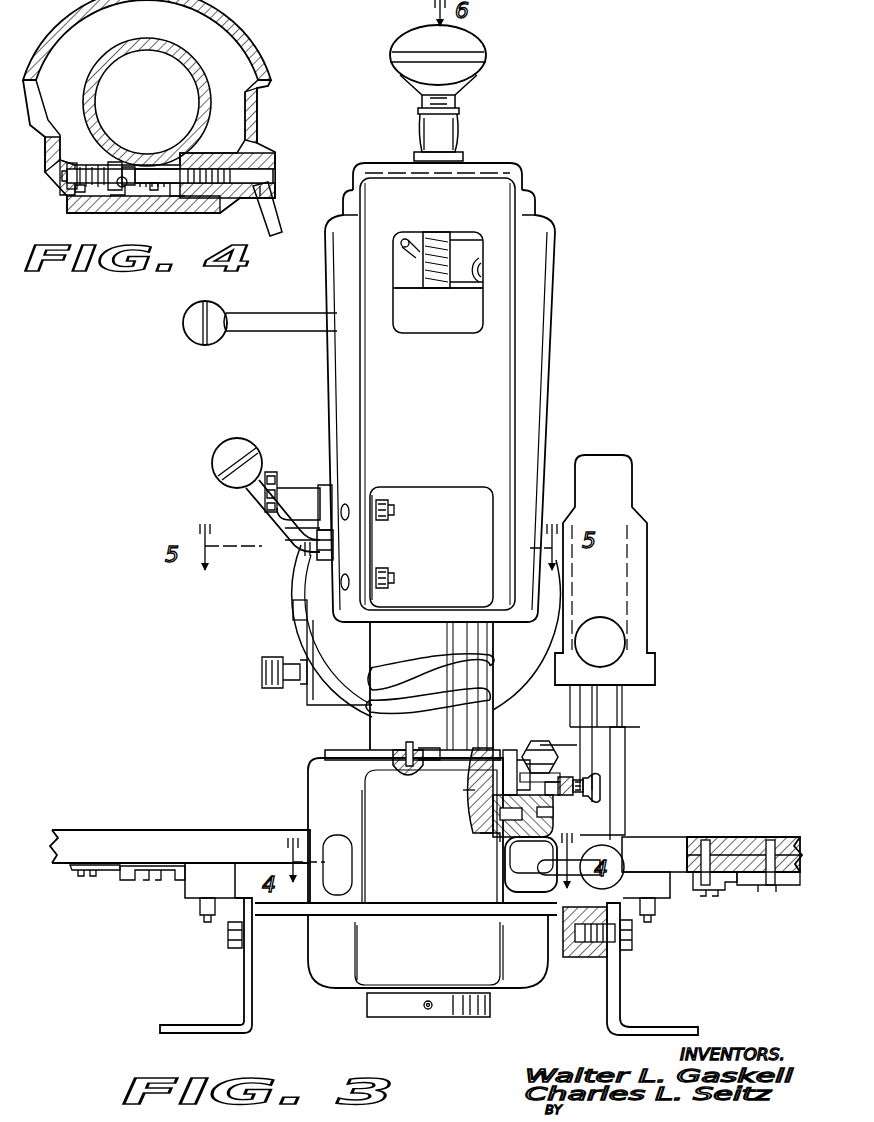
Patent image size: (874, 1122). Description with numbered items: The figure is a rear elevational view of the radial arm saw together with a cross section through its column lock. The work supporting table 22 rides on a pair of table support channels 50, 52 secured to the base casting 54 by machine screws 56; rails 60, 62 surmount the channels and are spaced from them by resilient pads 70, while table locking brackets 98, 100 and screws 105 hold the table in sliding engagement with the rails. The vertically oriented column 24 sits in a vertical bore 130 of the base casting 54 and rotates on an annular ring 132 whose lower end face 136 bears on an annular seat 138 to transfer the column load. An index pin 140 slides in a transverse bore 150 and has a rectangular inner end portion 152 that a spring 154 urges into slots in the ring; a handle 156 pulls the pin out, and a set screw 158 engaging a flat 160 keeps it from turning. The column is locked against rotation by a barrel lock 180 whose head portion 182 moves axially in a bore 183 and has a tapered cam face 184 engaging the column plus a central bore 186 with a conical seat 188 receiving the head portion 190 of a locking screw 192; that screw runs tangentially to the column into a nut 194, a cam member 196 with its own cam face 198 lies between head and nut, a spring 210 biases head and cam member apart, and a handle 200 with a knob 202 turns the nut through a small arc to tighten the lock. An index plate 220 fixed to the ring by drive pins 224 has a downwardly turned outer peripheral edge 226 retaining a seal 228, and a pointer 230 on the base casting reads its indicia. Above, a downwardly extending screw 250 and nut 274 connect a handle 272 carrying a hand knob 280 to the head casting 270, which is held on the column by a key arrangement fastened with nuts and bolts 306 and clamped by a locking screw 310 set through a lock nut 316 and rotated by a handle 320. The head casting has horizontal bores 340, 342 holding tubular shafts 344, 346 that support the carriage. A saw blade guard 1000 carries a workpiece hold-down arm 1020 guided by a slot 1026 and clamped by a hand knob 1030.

In FIG. 3, the work supporting table 22 is at (128, 828).
In FIG. 4, the vertically oriented column 24 is at (200, 56).
In FIG. 3, the vertically oriented column 24 is at (368, 728).
In FIG. 3, the table support channel 50 is at (623, 994).
In FIG. 3, the table support channel 52 is at (240, 960).
In FIG. 4, the base casting 54 is at (272, 82).
In FIG. 3, the base casting 54 is at (340, 991).
In FIG. 3, the machine screws 56 is at (226, 936).
In FIG. 3, the rail 60 is at (722, 889).
In FIG. 3, the rail 62 is at (182, 878).
In FIG. 3, the resilient pads 70 is at (196, 900).
In FIG. 3, the table locking bracket 98 is at (756, 884).
In FIG. 3, the table locking bracket 100 is at (118, 876).
In FIG. 3, the screws 105 is at (752, 888).
In FIG. 3, the vertical bore 130 is at (476, 824).
In FIG. 3, the annular ring 132 is at (470, 786).
In FIG. 3, the lower end face 136 is at (478, 806).
In FIG. 3, the annular seat 138 is at (498, 838).
In FIG. 3, the index pin 140 is at (576, 785).
In FIG. 3, the transverse bore 150 is at (595, 841).
In FIG. 3, the rectangular inner end portion 152 is at (500, 762).
In FIG. 3, the spring 154 is at (540, 742).
In FIG. 3, the handle 156 is at (600, 784).
In FIG. 3, the set screw 158 is at (565, 780).
In FIG. 3, the flat 160 is at (523, 815).
In FIG. 4, the barrel lock 180 is at (265, 150).
In FIG. 3, the barrel lock 180 is at (522, 888).
In FIG. 4, the head portion 182 is at (122, 195).
In FIG. 4, the bore 183 is at (80, 190).
In FIG. 4, the tapered cam face 184 is at (115, 162).
In FIG. 4, the central bore 186 is at (122, 190).
In FIG. 4, the conical seat 188 is at (72, 176).
In FIG. 4, the head portion of locking screw 190 is at (100, 168).
In FIG. 4, the locking screw 192 is at (172, 192).
In FIG. 4, the nut 194 is at (276, 160).
In FIG. 4, the cam member 196 is at (200, 165).
In FIG. 4, the cam face 198 is at (165, 169).
In FIG. 4, the handle 200 is at (272, 212).
In FIG. 3, the handle 200 is at (508, 868).
In FIG. 3, the knob 202 is at (624, 856).
In FIG. 4, the spring 210 is at (133, 167).
In FIG. 3, the index plate 220 is at (430, 752).
In FIG. 3, the drive pins 224 is at (410, 742).
In FIG. 3, the downwardly turned outer peripheral edge 226 is at (322, 752).
In FIG. 3, the seal 228 is at (400, 776).
In FIG. 3, the pointer 230 is at (562, 755).
In FIG. 3, the downwardly extending screw 250 is at (455, 248).
In FIG. 3, the head casting 270 is at (554, 386).
In FIG. 3, the handle 272 is at (468, 136).
In FIG. 3, the nut 274 is at (462, 108).
In FIG. 3, the hand knob 280 is at (492, 58).
In FIG. 3, the nuts and bolts 306 is at (390, 524).
In FIG. 3, the locking screw 310 is at (292, 556).
In FIG. 3, the lock nut 316 is at (326, 527).
In FIG. 3, the handle 320 is at (248, 440).
In FIG. 3, the horizontal bore 340 is at (420, 240).
In FIG. 3, the horizontal bore 342 is at (470, 292).
In FIG. 3, the tubular shaft 344 is at (404, 242).
In FIG. 3, the tubular shaft 346 is at (481, 270).
In FIG. 3, the saw blade guard 1000 is at (640, 488).
In FIG. 3, the workpiece hold-down arm 1020 is at (628, 768).
In FIG. 3, the slot 1026 is at (605, 796).
In FIG. 3, the hand knob 1030 is at (628, 636).